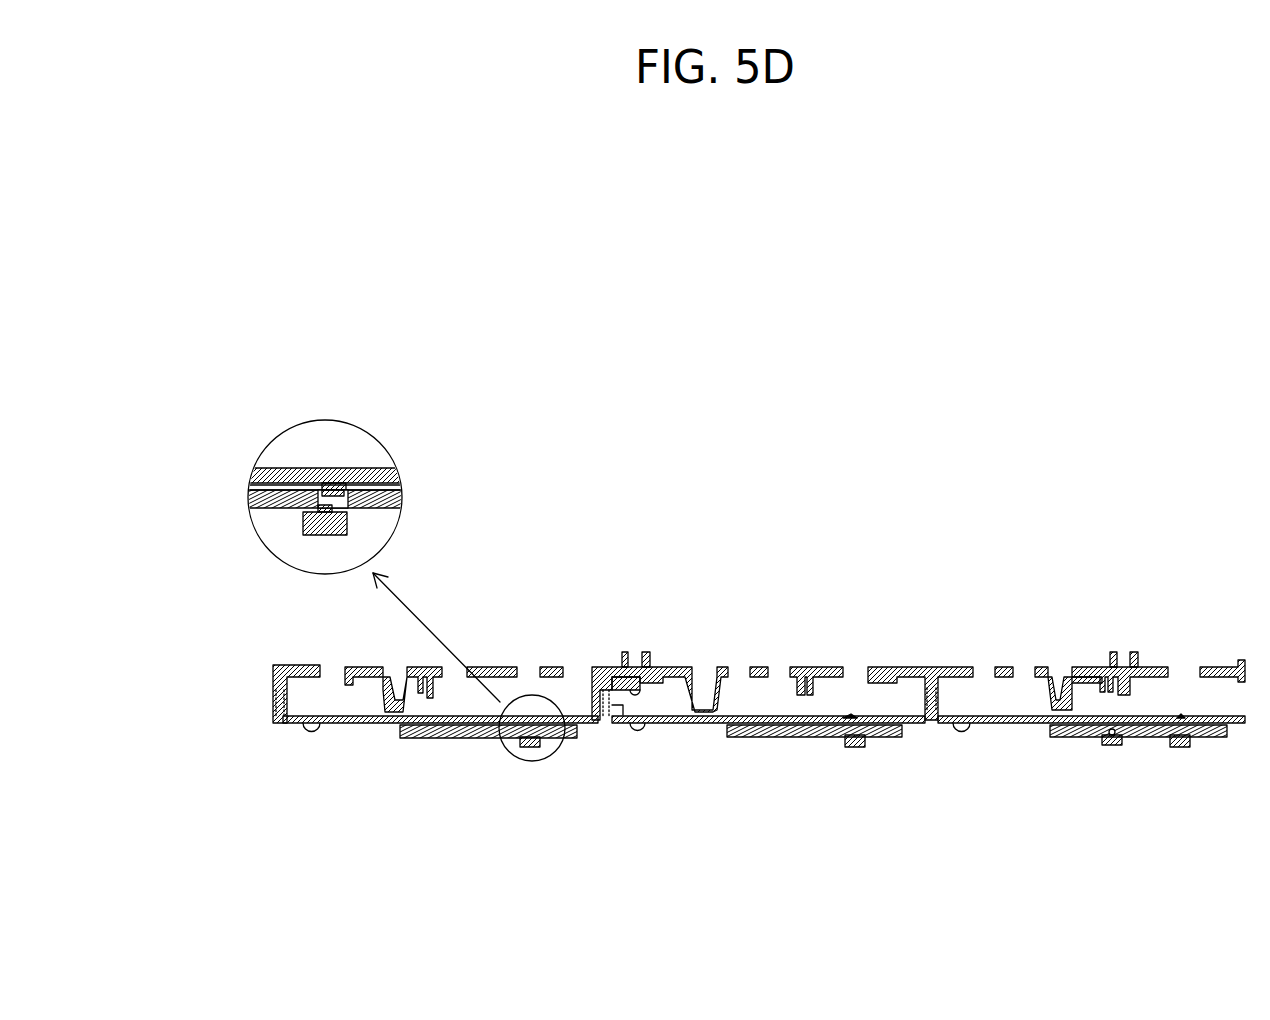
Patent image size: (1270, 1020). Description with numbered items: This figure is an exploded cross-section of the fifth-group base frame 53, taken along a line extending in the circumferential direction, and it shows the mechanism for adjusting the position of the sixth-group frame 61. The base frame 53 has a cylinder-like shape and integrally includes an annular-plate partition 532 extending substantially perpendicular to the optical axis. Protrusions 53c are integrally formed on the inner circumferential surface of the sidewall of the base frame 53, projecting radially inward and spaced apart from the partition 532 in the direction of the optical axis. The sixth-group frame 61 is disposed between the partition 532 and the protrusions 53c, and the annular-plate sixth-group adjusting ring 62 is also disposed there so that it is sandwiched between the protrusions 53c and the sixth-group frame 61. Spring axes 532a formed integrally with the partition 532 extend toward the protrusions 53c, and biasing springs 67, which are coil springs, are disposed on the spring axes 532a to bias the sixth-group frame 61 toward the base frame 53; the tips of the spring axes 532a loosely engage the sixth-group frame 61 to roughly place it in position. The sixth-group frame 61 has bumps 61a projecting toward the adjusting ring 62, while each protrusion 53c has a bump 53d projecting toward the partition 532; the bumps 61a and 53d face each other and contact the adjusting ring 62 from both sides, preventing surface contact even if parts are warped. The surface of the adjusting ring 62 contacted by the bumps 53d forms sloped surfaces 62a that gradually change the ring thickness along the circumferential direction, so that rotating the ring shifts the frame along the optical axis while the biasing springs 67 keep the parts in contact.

The sixth-group frame 61 is at (298, 468).
The bump 61a is at (345, 483).
The sixth-group adjusting ring 62 is at (270, 508).
The sloped surface 62a is at (358, 505).
The fifth-group base frame 53 is at (600, 667).
The protrusion 53c is at (320, 535).
The bump 53d is at (330, 511).
The partition 532 is at (883, 668).
The spring axis 532a is at (630, 690).
The biasing spring 67 is at (620, 707).